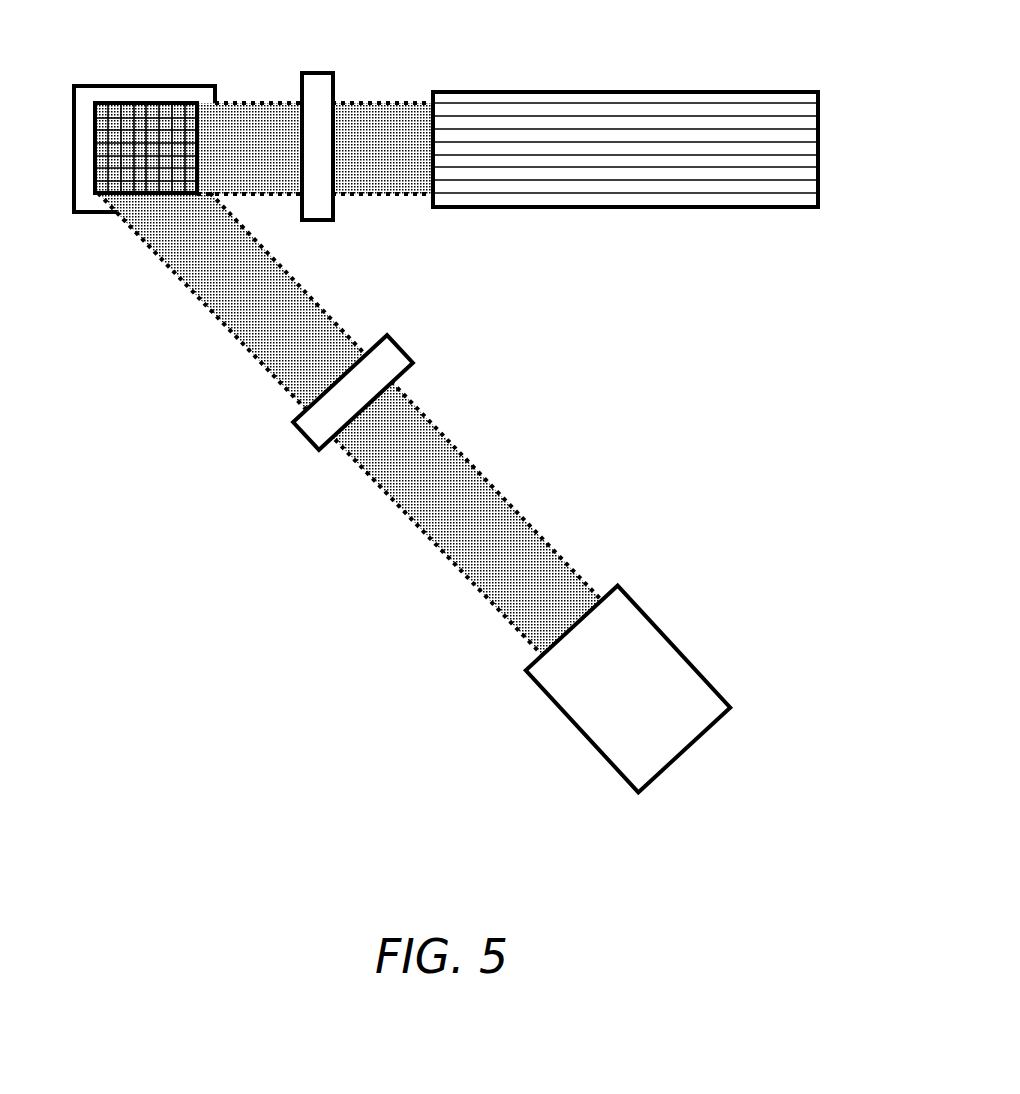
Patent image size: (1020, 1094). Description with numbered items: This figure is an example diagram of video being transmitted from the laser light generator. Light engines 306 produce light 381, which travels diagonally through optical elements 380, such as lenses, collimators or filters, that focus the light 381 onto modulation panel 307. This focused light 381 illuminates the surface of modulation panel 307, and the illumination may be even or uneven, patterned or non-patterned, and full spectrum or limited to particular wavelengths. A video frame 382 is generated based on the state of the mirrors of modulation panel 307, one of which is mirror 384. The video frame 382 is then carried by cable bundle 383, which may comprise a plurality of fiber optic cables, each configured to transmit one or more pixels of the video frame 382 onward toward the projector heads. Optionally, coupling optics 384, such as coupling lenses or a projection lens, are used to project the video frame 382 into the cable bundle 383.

The modulation panel 307 is at (130, 88).
The mirror / coupling optics 384 is at (317, 103).
The video frame 382 is at (273, 133).
The cable bundle 383 is at (567, 93).
The optical elements 380 is at (398, 343).
The light 381 is at (489, 483).
The light engines 306 is at (627, 605).